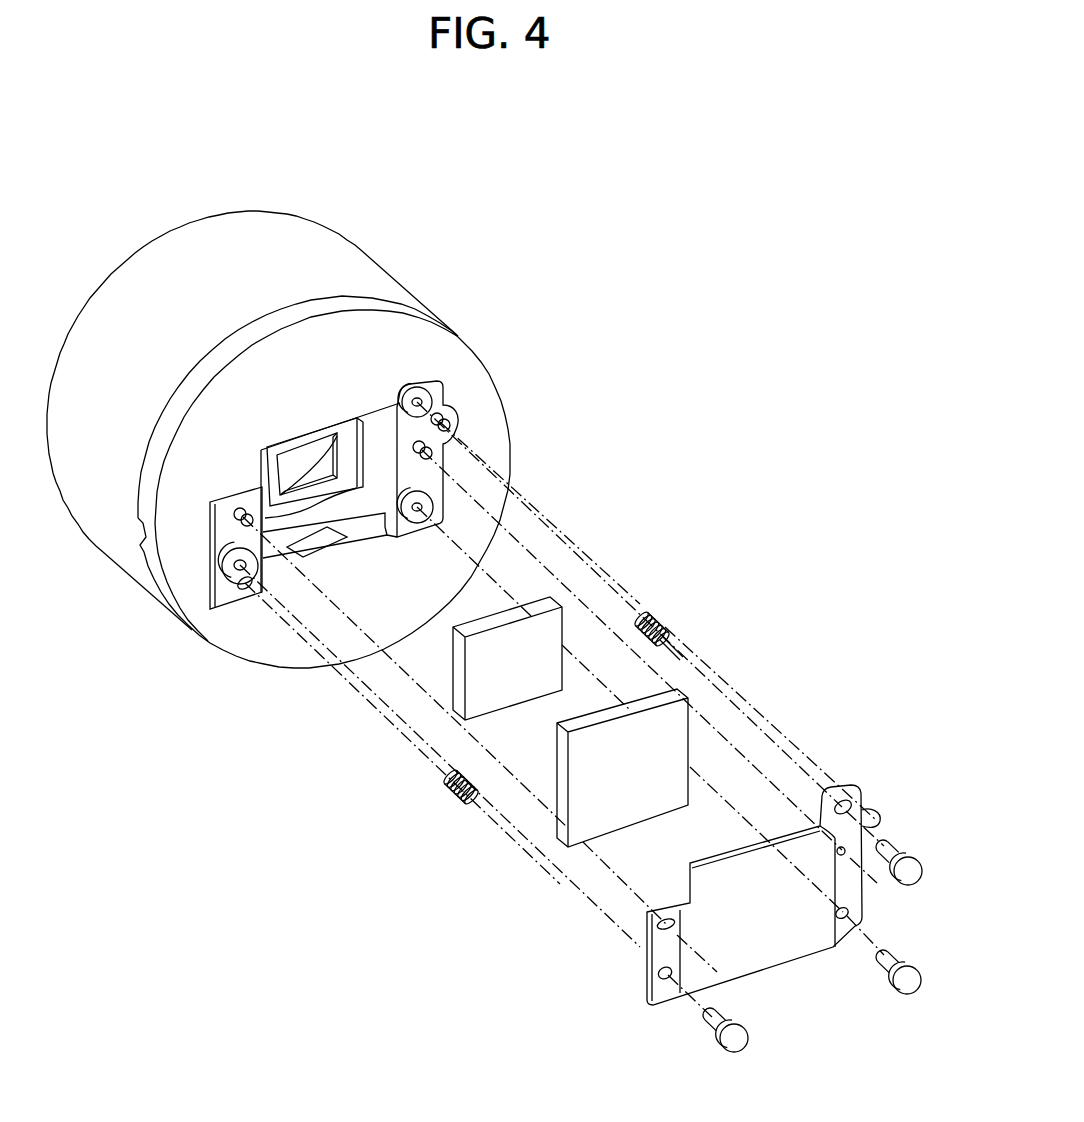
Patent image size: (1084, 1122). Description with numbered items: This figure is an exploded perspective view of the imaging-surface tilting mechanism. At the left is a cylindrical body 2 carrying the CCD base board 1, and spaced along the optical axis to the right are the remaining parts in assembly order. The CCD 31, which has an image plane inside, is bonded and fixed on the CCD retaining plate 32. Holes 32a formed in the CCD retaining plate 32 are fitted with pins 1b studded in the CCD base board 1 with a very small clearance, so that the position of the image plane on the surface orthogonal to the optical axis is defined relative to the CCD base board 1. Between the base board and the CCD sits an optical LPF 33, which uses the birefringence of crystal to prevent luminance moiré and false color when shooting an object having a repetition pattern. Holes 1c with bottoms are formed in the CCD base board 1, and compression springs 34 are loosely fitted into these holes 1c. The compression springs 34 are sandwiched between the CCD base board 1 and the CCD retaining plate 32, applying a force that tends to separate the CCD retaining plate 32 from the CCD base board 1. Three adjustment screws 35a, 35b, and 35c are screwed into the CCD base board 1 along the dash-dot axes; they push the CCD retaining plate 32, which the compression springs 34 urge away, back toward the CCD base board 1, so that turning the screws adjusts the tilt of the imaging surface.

The CCD base board 1 is at (369, 485).
The pins 1b is at (236, 516).
The holes with bottoms 1c is at (445, 424).
The lens barrel 2 is at (403, 287).
The CCD 31 is at (672, 692).
The CCD retaining plate 32 is at (755, 880).
The holes 32a is at (647, 921).
The optical LPF 33 is at (546, 599).
The compression springs 34 is at (670, 622).
The adjustment screw 35a is at (913, 885).
The adjustment screw 35b is at (922, 993).
The adjustment screw 35c is at (748, 1028).